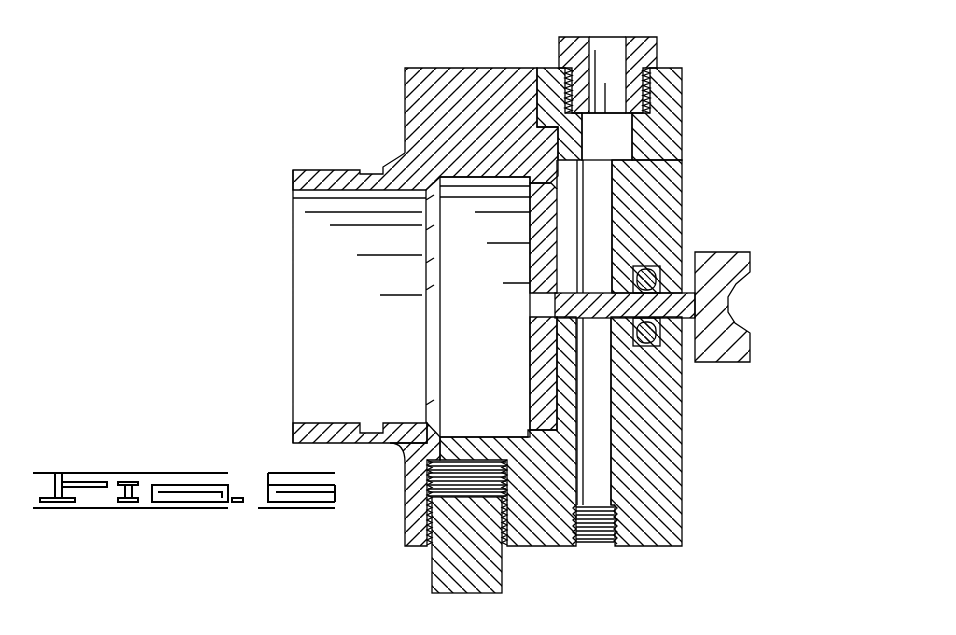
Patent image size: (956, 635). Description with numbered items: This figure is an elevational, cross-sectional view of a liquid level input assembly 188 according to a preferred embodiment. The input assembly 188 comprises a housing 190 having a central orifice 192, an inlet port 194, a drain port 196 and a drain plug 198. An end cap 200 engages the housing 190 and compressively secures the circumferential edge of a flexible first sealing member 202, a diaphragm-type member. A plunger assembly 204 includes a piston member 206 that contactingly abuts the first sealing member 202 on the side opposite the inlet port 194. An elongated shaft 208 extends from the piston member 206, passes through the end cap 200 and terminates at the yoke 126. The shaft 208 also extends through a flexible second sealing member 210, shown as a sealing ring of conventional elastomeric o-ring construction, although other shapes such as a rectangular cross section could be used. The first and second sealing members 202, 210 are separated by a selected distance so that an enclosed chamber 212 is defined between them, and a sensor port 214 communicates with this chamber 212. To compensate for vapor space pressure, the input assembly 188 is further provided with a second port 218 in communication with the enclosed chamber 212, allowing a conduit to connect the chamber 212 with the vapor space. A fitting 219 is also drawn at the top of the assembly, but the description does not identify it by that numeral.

The input assembly 188 is at (300, 107).
The housing 190 is at (468, 67).
The central orifice 192 is at (333, 292).
The inlet port 194 is at (352, 420).
The drain port 196 is at (426, 523).
The drain plug 198 is at (488, 562).
The end cap 200 is at (664, 128).
The first sealing member 202 is at (528, 232).
The plunger assembly 204 is at (723, 224).
The piston member 206 is at (544, 361).
The elongated shaft 208 is at (681, 430).
The second sealing member 210 is at (650, 352).
The enclosed chamber 212 is at (601, 231).
The sensor port 214 is at (601, 545).
The second port 218 is at (649, 93).
The fitting 219 is at (638, 50).
The yoke 126 is at (751, 255).